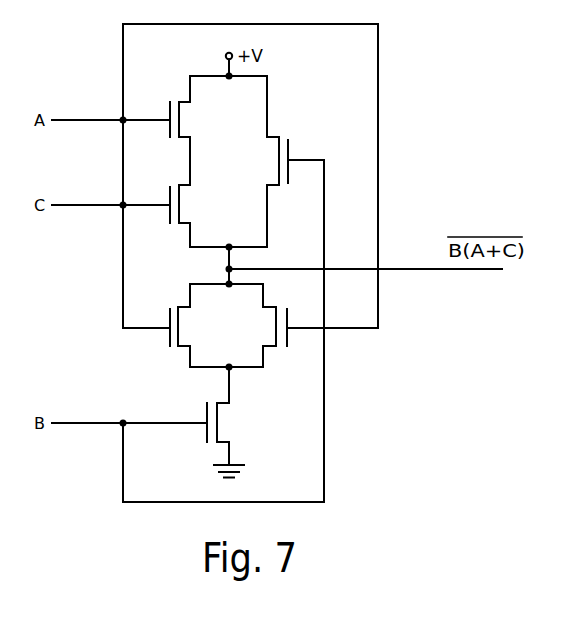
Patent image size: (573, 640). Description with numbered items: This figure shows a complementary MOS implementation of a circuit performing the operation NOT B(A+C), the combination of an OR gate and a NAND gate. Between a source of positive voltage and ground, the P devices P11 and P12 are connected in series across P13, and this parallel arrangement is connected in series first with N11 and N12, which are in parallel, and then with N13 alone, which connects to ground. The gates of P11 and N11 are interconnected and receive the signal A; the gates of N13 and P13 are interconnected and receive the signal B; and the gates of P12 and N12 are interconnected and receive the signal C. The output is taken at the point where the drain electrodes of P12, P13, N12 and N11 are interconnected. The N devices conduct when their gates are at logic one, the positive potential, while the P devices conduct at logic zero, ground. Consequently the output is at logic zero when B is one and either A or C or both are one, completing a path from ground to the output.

The P-channel MOS device P11 is at (190, 130).
The P-channel MOS device P12 is at (192, 216).
The P-channel MOS device P13 is at (265, 161).
The N-channel MOS device N11 is at (265, 325).
The N-channel MOS device N12 is at (193, 325).
The N-channel MOS device N13 is at (232, 416).